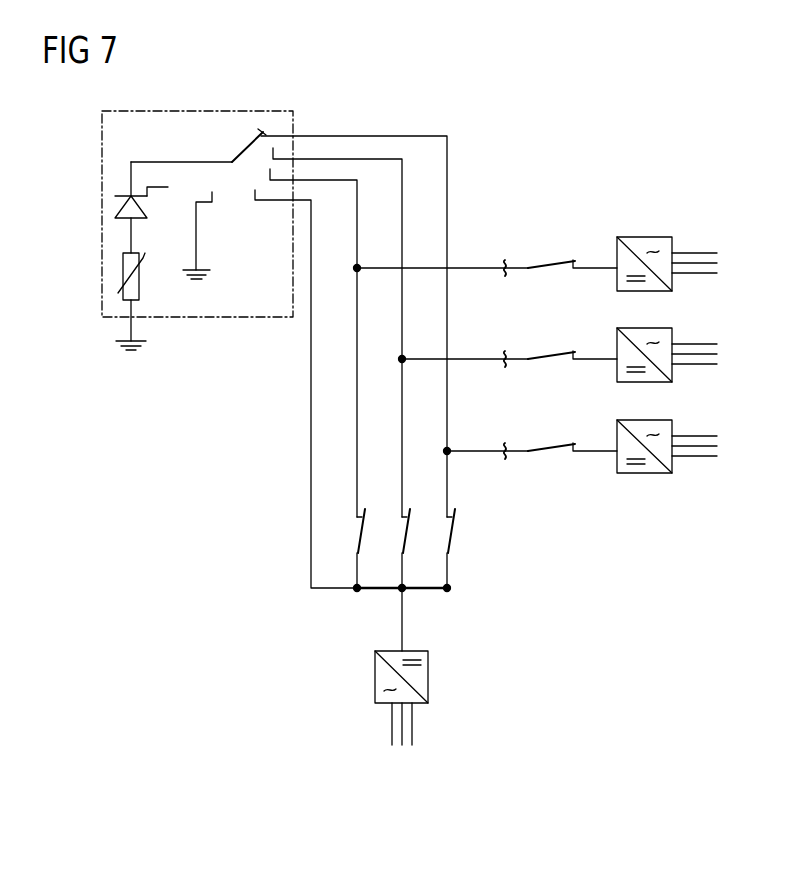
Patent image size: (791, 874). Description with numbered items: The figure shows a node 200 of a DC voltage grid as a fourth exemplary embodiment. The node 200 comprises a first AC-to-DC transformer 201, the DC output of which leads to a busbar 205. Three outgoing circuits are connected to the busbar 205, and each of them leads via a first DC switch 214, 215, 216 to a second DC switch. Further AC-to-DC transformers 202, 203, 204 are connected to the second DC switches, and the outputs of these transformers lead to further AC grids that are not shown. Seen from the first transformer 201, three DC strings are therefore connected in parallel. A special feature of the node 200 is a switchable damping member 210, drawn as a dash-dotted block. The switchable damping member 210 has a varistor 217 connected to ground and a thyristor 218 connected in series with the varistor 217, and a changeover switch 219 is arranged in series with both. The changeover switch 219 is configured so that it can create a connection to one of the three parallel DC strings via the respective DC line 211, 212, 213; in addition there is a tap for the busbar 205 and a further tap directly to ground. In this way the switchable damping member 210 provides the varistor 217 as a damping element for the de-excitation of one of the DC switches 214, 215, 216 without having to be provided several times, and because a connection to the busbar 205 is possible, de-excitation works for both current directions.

The node 200 is at (585, 130).
The first AC-to-DC transformer 201 is at (428, 672).
The AC-to-DC transformer 202 is at (647, 237).
The AC-to-DC transformer 203 is at (672, 374).
The AC-to-DC transformer 204 is at (645, 473).
The busbar 205 is at (374, 590).
The switchable damping member 210 is at (222, 318).
The DC line 211 is at (447, 173).
The DC line 212 is at (402, 223).
The DC line 213 is at (311, 425).
The first DC switch 214 is at (450, 537).
The first DC switch 215 is at (405, 530).
The first DC switch 216 is at (356, 530).
The varistor 217 is at (122, 266).
The thyristor 218 is at (115, 208).
The changeover switch 219 is at (252, 139).